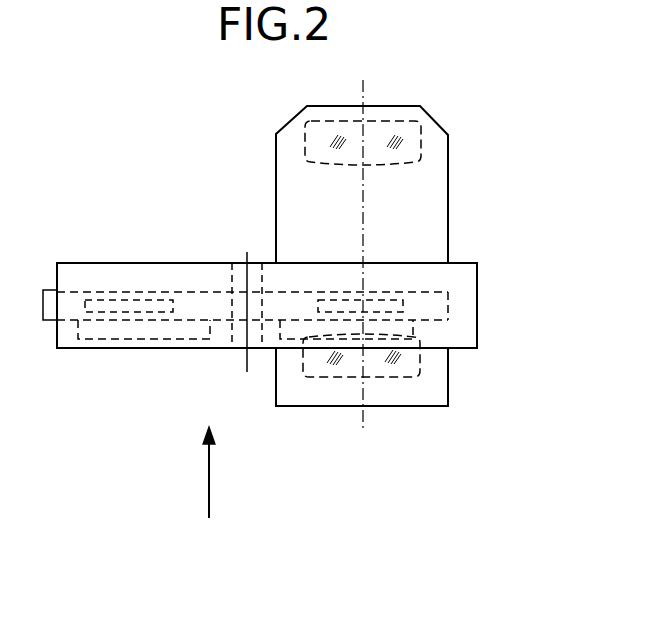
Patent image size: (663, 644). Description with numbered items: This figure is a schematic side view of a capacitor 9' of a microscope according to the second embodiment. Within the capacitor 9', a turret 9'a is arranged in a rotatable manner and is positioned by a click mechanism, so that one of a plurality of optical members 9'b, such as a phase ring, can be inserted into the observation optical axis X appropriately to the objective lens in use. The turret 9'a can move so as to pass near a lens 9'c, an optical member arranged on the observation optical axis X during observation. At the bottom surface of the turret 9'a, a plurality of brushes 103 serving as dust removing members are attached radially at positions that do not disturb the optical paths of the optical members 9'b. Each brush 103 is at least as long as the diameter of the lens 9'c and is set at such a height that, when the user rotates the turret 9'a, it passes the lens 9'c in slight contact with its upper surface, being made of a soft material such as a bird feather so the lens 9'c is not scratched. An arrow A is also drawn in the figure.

The capacitor 9' is at (260, 285).
The turret 9'a is at (301, 286).
The optical members 9'b is at (327, 260).
The lens 9'c is at (362, 288).
The brushes 103 is at (143, 348).
The observation optical axis X is at (363, 241).
The direction arrow A is at (225, 472).